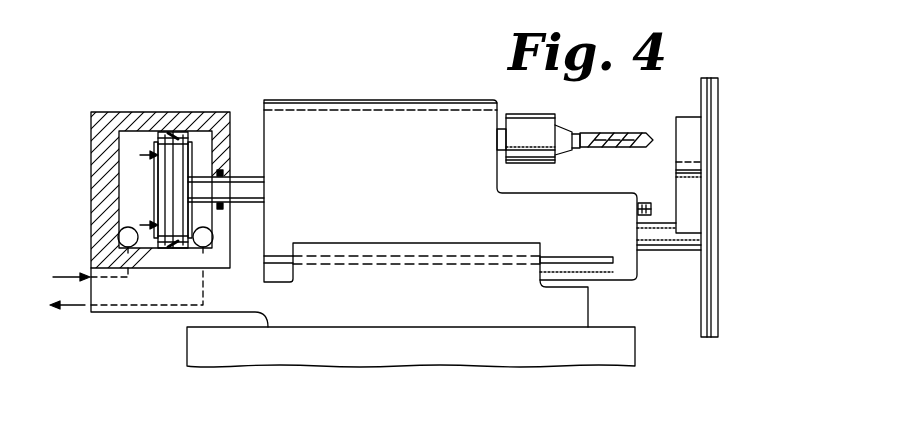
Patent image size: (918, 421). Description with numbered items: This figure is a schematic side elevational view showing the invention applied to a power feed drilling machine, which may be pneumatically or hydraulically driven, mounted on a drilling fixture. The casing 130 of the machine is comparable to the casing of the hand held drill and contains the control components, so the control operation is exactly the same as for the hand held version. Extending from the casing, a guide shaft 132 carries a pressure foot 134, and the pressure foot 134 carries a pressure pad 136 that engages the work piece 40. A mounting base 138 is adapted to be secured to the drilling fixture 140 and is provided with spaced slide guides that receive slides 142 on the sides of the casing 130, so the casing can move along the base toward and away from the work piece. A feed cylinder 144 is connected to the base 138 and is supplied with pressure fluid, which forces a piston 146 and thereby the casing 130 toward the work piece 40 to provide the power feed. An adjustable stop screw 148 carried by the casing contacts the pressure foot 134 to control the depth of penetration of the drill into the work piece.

The work piece 40 is at (706, 108).
The casing 130 is at (395, 183).
The guide shaft 132 is at (662, 242).
The pressure foot 134 is at (693, 207).
The pressure pad 136 is at (690, 149).
The mounting base 138 is at (400, 294).
The drilling fixture 140 is at (570, 346).
The slides 142 is at (590, 234).
The feed cylinder 144 is at (95, 195).
The piston 146 is at (188, 221).
The adjustable stop screw 148 is at (644, 202).